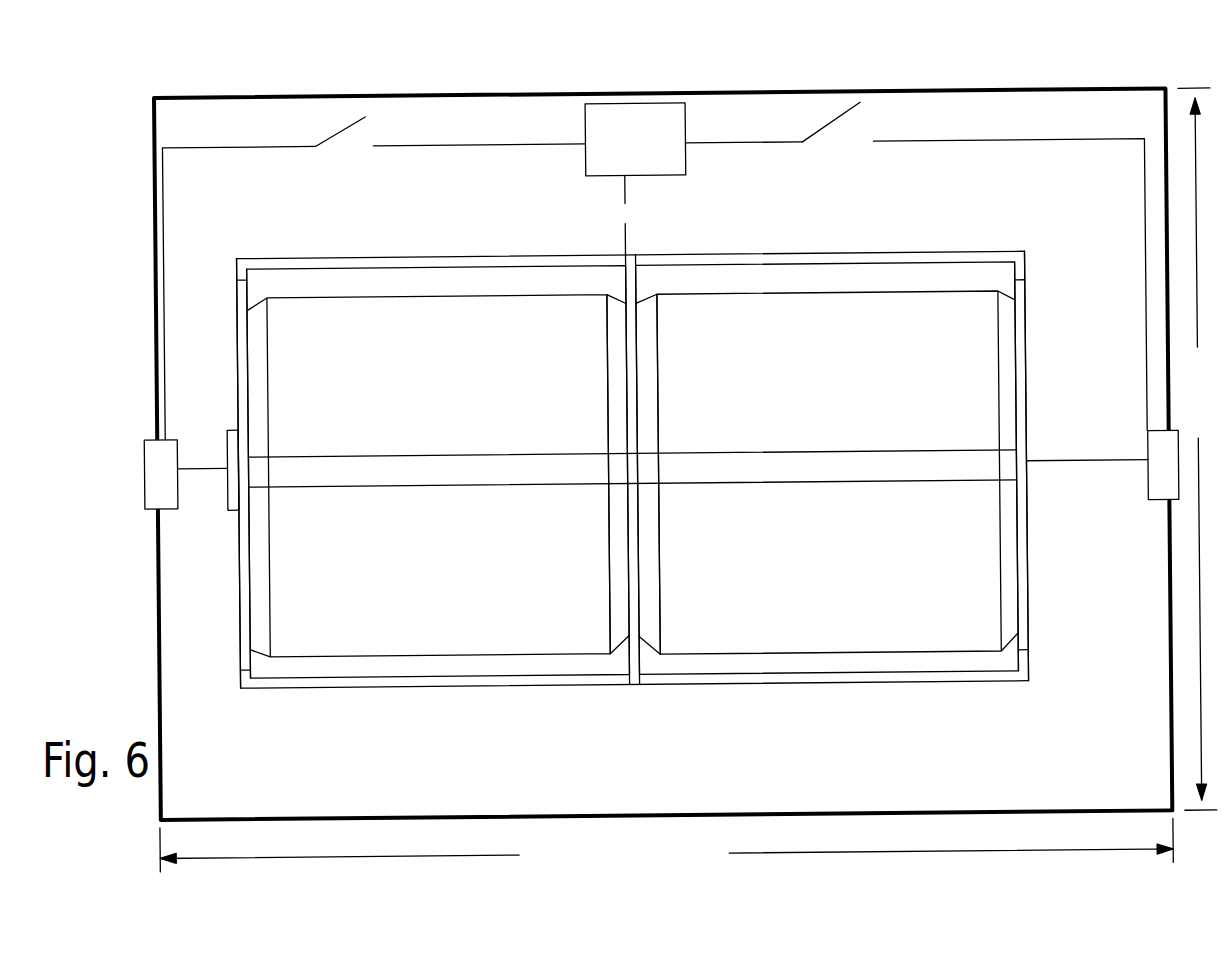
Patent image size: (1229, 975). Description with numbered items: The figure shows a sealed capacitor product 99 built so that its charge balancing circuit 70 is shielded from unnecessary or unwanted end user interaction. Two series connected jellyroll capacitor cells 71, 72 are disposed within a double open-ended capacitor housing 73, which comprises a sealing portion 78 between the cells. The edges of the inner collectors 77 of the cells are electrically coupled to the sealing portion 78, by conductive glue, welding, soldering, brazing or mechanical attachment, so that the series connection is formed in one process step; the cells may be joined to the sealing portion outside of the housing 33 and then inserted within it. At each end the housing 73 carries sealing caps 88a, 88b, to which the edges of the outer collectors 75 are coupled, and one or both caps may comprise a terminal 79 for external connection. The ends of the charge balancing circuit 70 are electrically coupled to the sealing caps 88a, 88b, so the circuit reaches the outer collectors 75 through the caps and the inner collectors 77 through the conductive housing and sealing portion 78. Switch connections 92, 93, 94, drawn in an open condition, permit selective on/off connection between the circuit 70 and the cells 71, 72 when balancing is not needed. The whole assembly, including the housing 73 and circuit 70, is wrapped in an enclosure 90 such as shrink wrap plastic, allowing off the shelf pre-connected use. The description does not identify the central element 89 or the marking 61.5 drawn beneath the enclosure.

The sealed capacitor product 99 is at (127, 865).
The enclosure 90 is at (152, 162).
The switch connection 92 is at (327, 133).
The switch connection 93 is at (820, 130).
The charge balancing circuit 70 is at (642, 145).
The switch connection 94 is at (645, 203).
The capacitor housing 73 is at (270, 260).
The outer collectors 75 is at (256, 588).
The sealing portion 78 is at (633, 512).
The capacitor cell 71 is at (402, 320).
The capacitor cell 72 is at (818, 335).
The inner collectors 77 is at (652, 623).
The shaft 89 is at (945, 470).
The terminal 79 is at (225, 505).
The sealing cap 88a is at (232, 312).
The sealing cap 88b is at (1021, 340).
The housing 33 is at (1199, 449).
The width dimension 61.5 is at (666, 855).